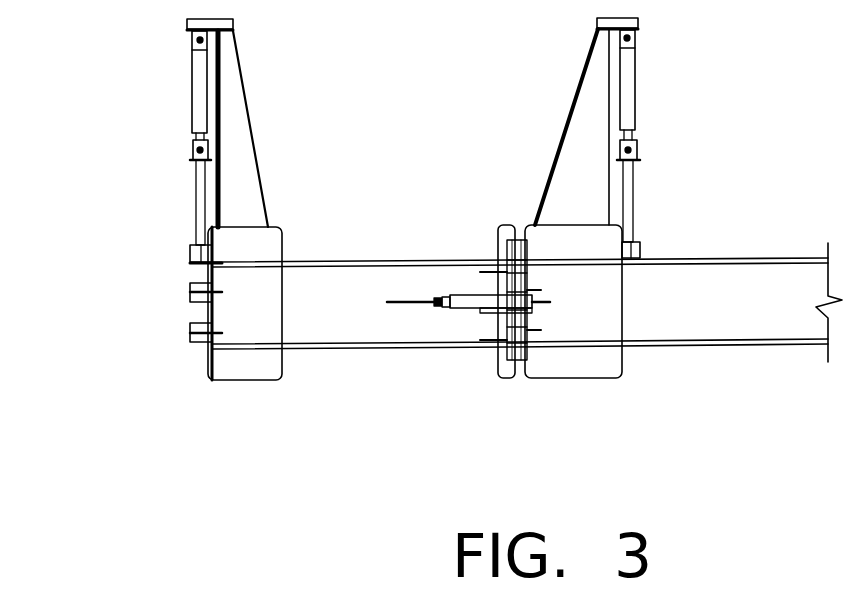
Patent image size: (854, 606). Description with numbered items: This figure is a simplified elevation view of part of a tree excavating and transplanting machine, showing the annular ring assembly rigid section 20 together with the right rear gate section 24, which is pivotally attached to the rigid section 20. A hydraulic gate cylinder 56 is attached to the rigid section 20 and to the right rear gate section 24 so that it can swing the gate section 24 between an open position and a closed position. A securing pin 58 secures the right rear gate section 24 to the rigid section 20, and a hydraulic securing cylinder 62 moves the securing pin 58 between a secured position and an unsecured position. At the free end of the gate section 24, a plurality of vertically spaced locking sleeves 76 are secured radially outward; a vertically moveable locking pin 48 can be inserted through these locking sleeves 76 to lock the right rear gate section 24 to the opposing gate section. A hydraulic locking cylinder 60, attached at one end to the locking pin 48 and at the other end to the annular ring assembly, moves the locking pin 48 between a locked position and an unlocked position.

The annular ring assembly rigid section 20 is at (678, 332).
The right rear gate section 24 is at (363, 340).
The locking pin 48 is at (127, 202).
The hydraulic gate cylinder 56 is at (452, 248).
The securing pin 58 is at (681, 199).
The hydraulic locking cylinder 60 is at (131, 97).
The hydraulic securing cylinder 62 is at (688, 85).
The locking sleeves 76 is at (190, 258).